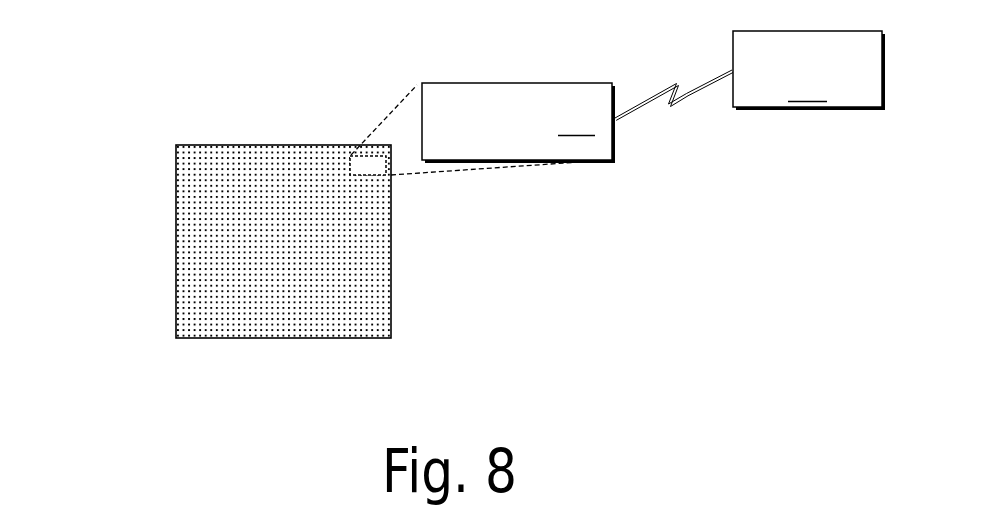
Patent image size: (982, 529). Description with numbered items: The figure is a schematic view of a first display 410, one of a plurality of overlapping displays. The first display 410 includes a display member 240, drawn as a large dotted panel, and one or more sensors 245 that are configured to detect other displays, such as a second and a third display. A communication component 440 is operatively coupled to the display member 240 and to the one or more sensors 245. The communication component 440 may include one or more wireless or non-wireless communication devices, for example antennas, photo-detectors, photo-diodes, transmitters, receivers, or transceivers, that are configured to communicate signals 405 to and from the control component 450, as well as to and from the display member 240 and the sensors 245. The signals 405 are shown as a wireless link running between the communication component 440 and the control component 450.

The first display 410 is at (267, 218).
The display member 240 is at (391, 313).
The sensors 245 is at (186, 314).
The communication component 440 is at (483, 129).
The control component 450 is at (809, 70).
The signals 405 is at (687, 94).